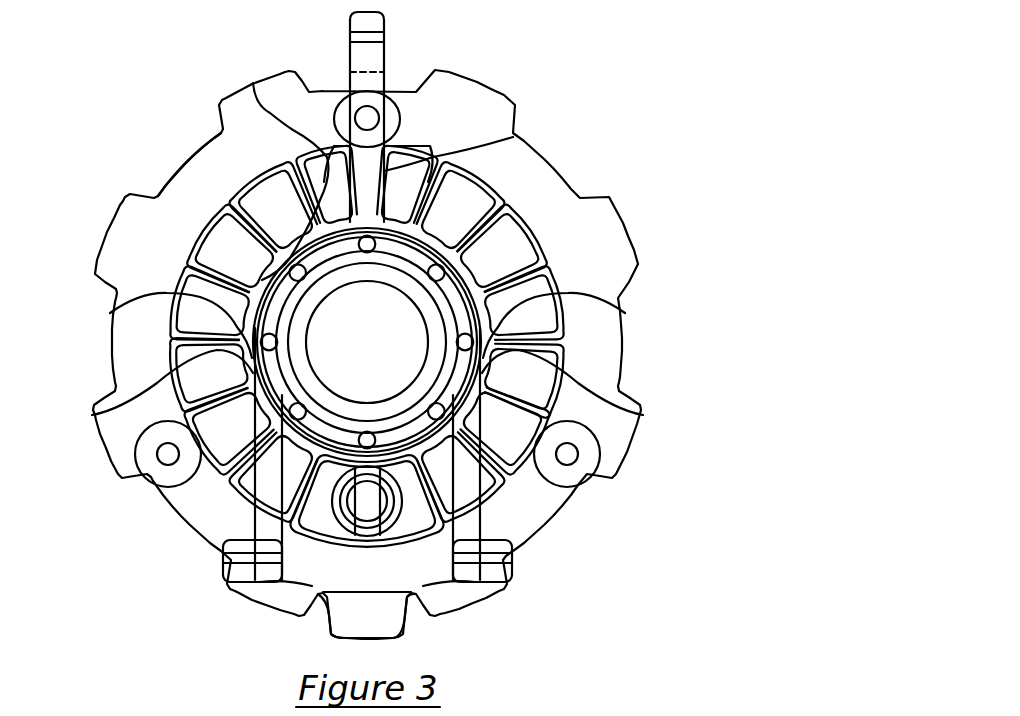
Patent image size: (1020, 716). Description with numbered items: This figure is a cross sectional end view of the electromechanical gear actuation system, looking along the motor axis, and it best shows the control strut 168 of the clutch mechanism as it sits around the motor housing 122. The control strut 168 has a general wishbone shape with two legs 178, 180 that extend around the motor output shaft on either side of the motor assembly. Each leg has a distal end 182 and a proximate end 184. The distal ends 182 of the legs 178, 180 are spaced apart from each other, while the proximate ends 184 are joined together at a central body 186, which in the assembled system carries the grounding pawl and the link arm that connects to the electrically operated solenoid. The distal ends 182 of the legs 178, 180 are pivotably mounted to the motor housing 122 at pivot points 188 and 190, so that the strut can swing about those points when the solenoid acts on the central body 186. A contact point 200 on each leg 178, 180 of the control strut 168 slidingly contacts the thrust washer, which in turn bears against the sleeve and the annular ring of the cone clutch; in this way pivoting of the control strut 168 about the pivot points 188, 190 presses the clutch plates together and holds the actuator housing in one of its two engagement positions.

The motor housing 122 is at (565, 170).
The control strut 168 is at (222, 133).
The leg 178 is at (110, 313).
The leg 180 is at (618, 308).
The distal end 182 is at (416, 626).
The proximate end 184 is at (253, 83).
The central body 186 is at (410, 207).
The pivot point 188 is at (215, 560).
The pivot point 190 is at (517, 563).
The contact point 200 is at (92, 415).